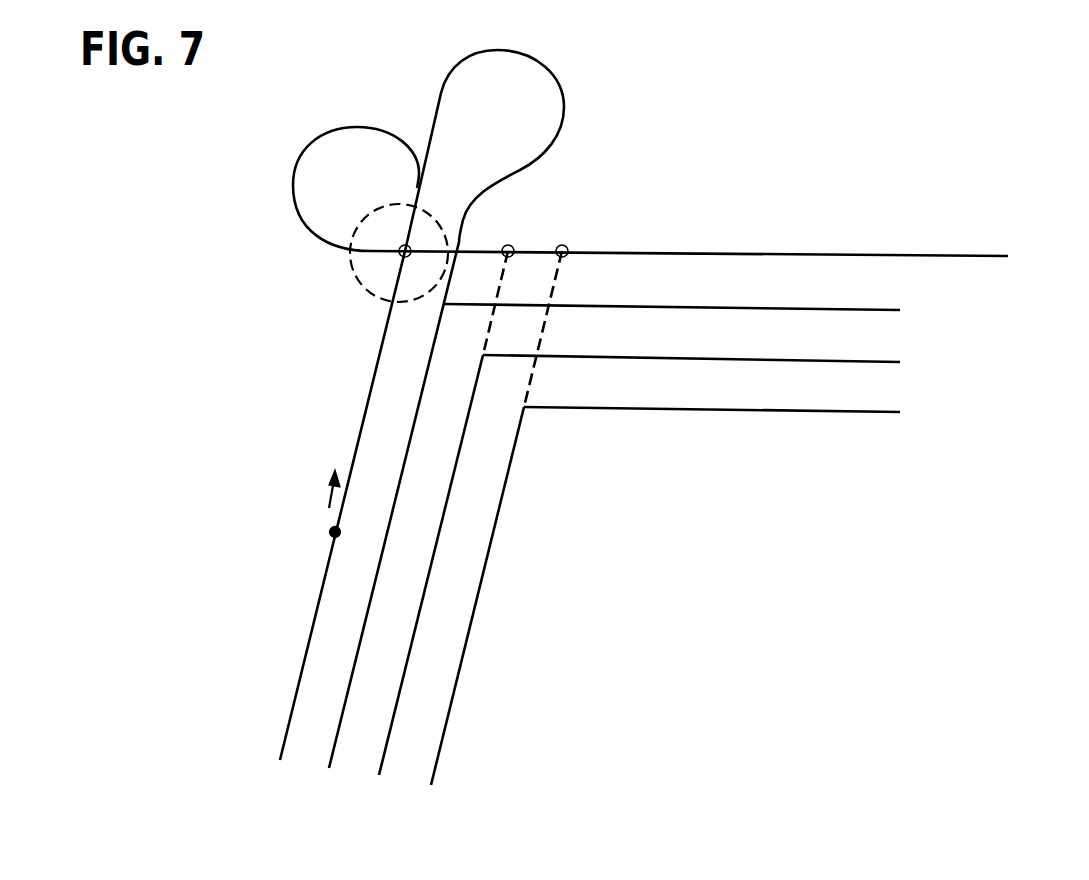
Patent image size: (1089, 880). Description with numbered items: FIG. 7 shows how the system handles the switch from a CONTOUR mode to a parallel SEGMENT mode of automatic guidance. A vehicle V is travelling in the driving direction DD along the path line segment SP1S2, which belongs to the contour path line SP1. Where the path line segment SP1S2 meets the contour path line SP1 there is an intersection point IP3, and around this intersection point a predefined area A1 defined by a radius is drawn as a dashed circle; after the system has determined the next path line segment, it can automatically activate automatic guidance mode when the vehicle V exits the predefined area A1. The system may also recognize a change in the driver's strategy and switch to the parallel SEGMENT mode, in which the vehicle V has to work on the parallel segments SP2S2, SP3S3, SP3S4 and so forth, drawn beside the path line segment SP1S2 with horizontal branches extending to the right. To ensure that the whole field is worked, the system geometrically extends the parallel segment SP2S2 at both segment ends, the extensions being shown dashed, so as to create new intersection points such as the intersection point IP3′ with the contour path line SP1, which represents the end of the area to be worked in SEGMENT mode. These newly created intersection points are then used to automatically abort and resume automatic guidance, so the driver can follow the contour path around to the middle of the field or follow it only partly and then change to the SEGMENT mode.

The contour path line SP1 is at (778, 253).
The path line segment SP1S2 is at (310, 630).
The parallel segment SP2S2 is at (337, 747).
The parallel segment SP3S3 is at (385, 752).
The parallel segment SP3S4 is at (445, 733).
The intersection point IP3 is at (398, 252).
The intersection point IP3′ is at (508, 244).
The predefined area A1 is at (364, 285).
The driving direction DD is at (318, 488).
The vehicle V is at (319, 529).